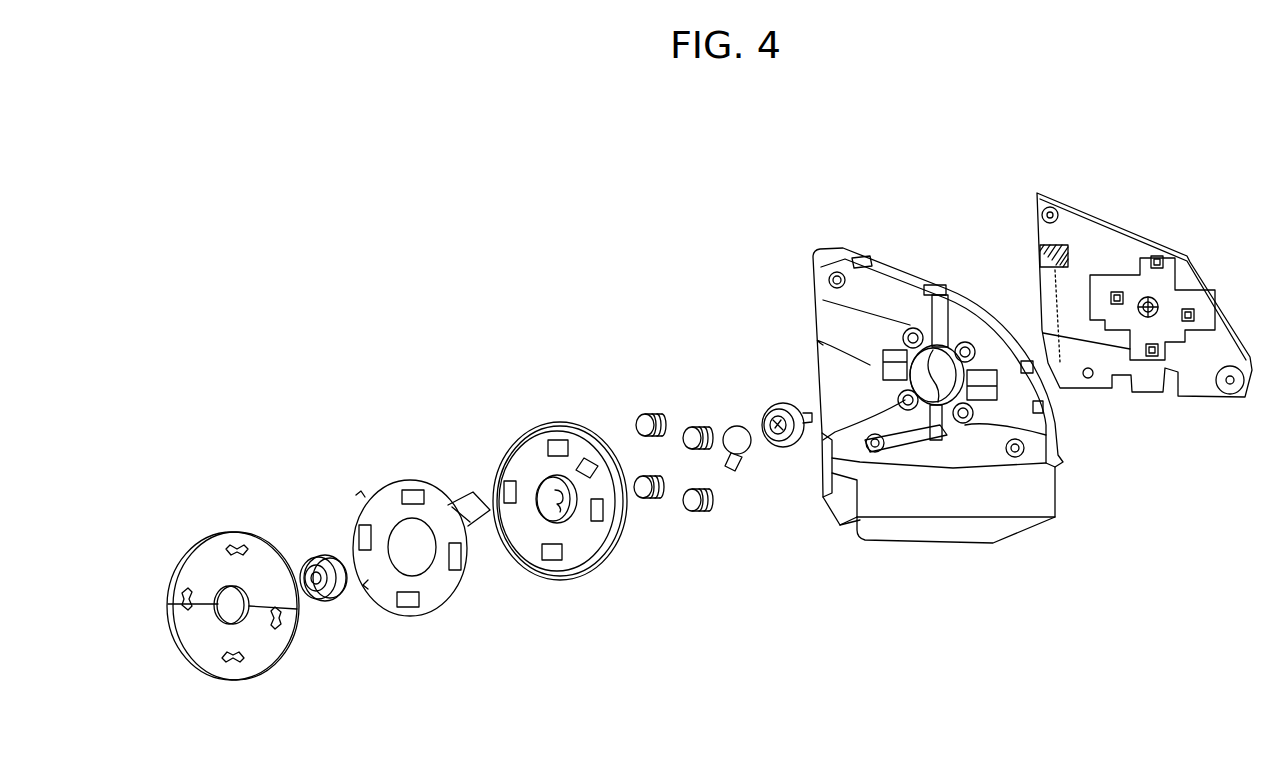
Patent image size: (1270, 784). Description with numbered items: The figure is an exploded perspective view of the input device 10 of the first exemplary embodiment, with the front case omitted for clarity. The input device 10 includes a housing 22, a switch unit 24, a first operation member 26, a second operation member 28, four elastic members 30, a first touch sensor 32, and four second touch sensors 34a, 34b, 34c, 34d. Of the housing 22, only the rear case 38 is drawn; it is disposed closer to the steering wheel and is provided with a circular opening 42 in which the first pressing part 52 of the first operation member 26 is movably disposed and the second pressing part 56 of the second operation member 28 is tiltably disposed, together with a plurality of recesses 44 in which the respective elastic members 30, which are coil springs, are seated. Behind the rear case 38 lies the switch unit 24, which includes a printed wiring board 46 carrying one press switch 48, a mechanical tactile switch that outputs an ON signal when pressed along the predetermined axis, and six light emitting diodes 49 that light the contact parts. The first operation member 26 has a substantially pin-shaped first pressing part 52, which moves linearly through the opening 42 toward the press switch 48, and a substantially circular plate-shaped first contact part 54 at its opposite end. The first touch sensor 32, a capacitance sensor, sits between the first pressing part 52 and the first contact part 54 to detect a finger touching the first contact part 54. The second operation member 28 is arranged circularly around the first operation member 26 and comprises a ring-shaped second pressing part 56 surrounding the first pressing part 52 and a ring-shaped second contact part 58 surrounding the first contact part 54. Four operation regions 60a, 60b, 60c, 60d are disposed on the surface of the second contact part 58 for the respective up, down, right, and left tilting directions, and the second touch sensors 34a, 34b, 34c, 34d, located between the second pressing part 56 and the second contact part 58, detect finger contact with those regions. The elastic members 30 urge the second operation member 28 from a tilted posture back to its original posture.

The input device 10 is at (722, 160).
The housing 22 is at (934, 366).
The switch unit 24 is at (1144, 316).
The first operation member 26 is at (763, 441).
The second operation member 28 is at (557, 467).
The elastic members 30 is at (692, 425).
The first touch sensor 32 is at (746, 455).
The second touch sensor 34a is at (415, 492).
The second touch sensor 34b is at (362, 536).
The second touch sensor 34c is at (408, 607).
The second touch sensor 34d is at (461, 557).
The rear case 38 is at (905, 282).
The opening 42 is at (950, 322).
The recesses 44 is at (975, 343).
The printed wiring board 46 is at (1113, 240).
The press switch 48 is at (1152, 318).
The light emitting diodes 49 is at (1192, 310).
The first pressing part 52 is at (792, 448).
The first contact part 54 is at (327, 600).
The second pressing part 56 is at (550, 424).
The second contact part 58 is at (207, 546).
The operation region 60a is at (237, 548).
The operation region 60b is at (176, 597).
The operation region 60c is at (231, 673).
The operation region 60d is at (283, 622).